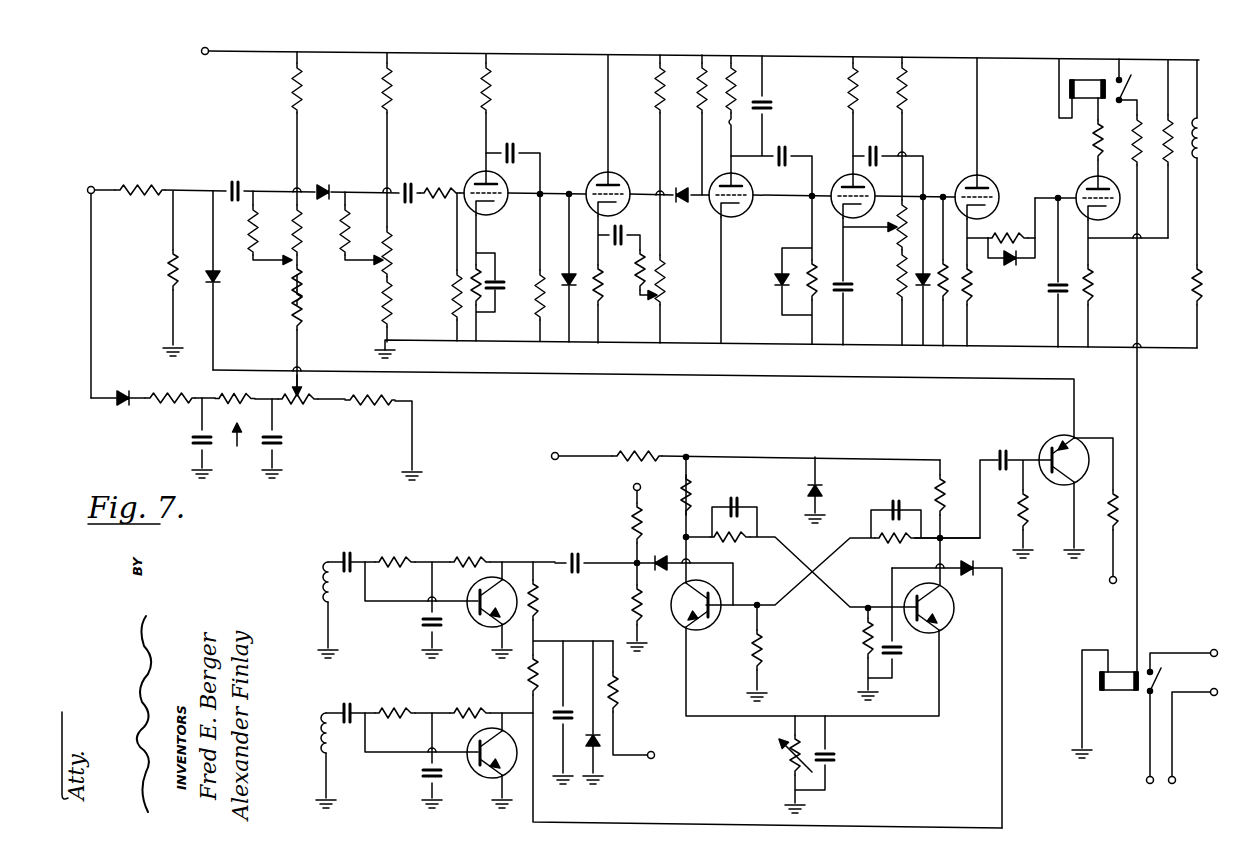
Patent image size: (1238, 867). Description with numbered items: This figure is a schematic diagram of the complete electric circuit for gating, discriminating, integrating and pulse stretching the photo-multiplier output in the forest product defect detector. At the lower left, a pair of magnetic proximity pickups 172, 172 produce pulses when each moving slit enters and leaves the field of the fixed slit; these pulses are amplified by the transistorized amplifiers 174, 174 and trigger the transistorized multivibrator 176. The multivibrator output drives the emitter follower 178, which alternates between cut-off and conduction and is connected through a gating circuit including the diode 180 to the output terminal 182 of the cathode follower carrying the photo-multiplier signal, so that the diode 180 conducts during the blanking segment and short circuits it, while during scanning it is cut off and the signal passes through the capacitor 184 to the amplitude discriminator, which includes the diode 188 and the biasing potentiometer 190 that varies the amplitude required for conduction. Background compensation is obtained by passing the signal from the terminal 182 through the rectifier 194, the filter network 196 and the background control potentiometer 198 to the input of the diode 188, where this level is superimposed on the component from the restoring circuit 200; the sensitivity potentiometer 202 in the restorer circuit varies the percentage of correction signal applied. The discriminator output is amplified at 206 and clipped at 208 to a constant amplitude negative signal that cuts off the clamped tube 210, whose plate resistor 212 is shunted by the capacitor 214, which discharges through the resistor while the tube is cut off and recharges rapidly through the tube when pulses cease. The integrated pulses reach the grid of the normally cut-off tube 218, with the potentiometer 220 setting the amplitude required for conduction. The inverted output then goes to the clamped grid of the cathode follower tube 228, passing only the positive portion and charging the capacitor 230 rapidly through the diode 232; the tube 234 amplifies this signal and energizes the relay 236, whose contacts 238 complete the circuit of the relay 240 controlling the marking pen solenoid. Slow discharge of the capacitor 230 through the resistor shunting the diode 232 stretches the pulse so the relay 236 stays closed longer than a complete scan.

The magnetic proximity pickup 172 is at (322, 582).
The transistorized amplifier 174 is at (480, 646).
The transistorized multivibrator 176 is at (733, 752).
The emitter follower 178 is at (1042, 436).
The diode 180 is at (221, 278).
The output terminal 182 is at (95, 186).
The capacitor 184 is at (229, 186).
The diode 188 is at (323, 186).
The biasing potentiometer 190 is at (379, 269).
The rectifier 194 is at (120, 406).
The filter network 196 is at (237, 438).
The background control potentiometer 198 is at (306, 405).
The restoring circuit 200 is at (420, 176).
The sensitivity potentiometer 202 is at (316, 222).
The amplifier 206 is at (465, 152).
The clipper 208 is at (588, 151).
The clamped tube 210 is at (706, 222).
The plate resistor 212 is at (728, 123).
The capacitor 214 is at (766, 108).
The tube 218 is at (832, 158).
The potentiometer 220 is at (895, 238).
The cathode follower tube 228 is at (961, 183).
The capacitor 230 is at (1054, 292).
The diode 232 is at (1011, 266).
The tube 234 is at (1080, 183).
The relay 236 is at (1068, 89).
The contacts 238 is at (1127, 92).
The relay 240 is at (1118, 692).